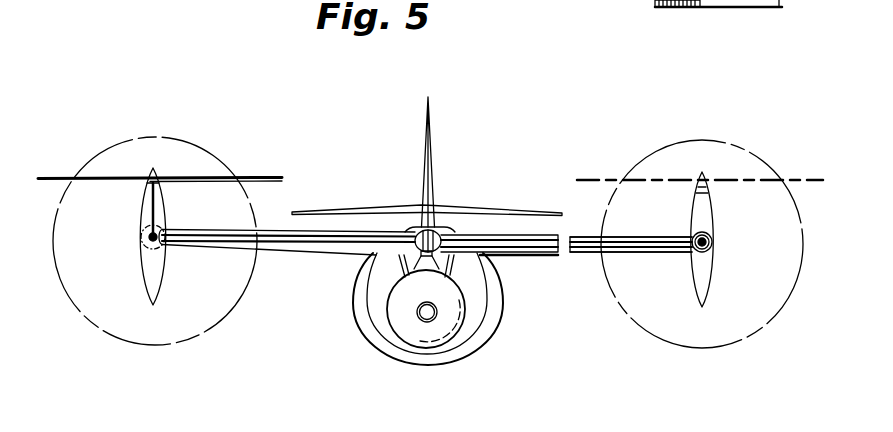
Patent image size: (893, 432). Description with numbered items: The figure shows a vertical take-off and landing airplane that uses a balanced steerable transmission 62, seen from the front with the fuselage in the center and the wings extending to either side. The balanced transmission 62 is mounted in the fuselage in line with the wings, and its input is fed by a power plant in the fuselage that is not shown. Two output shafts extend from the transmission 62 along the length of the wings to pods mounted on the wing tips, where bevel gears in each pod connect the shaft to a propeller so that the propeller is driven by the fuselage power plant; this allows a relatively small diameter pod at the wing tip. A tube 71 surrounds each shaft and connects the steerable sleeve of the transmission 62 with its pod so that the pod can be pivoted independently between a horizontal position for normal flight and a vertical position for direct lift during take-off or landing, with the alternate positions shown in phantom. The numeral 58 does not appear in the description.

The tail surface 58 is at (708, 7).
The balanced transmission 62 is at (437, 232).
The tube 71 is at (263, 230).